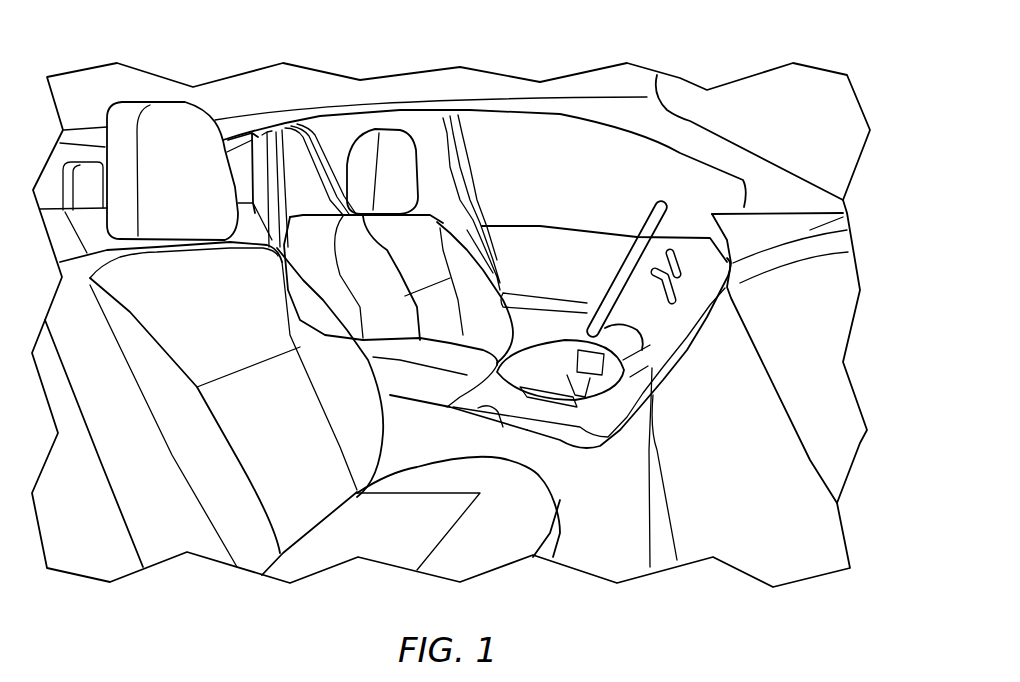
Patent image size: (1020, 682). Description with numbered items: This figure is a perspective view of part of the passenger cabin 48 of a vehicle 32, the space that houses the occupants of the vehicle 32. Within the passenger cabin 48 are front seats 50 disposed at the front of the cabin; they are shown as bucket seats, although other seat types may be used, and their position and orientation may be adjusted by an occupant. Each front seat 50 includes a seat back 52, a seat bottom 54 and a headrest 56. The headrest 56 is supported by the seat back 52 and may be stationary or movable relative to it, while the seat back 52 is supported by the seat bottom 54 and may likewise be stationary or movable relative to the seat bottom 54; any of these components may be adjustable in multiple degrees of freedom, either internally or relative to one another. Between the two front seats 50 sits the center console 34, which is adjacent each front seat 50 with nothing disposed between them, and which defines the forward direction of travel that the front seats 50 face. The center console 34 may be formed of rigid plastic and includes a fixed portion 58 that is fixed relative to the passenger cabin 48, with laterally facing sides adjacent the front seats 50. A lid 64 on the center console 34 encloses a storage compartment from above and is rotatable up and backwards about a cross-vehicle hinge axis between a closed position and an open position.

The vehicle 32 is at (641, 39).
The center console 34 is at (507, 387).
The passenger cabin 48 is at (730, 406).
The front seats 50 is at (446, 229).
The seat back 52 is at (323, 298).
The seat bottom 54 is at (573, 543).
The headrest 56 is at (362, 132).
The fixed portion 58 is at (500, 400).
The lid 64 is at (483, 270).